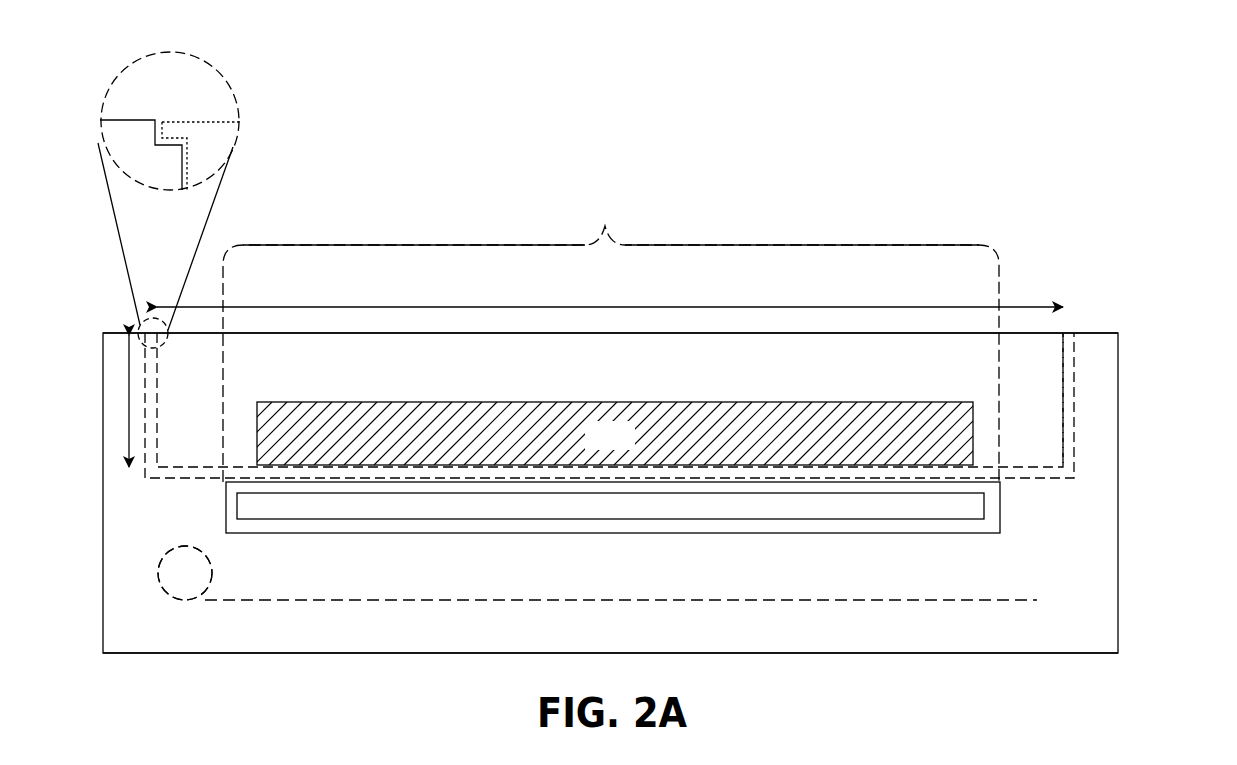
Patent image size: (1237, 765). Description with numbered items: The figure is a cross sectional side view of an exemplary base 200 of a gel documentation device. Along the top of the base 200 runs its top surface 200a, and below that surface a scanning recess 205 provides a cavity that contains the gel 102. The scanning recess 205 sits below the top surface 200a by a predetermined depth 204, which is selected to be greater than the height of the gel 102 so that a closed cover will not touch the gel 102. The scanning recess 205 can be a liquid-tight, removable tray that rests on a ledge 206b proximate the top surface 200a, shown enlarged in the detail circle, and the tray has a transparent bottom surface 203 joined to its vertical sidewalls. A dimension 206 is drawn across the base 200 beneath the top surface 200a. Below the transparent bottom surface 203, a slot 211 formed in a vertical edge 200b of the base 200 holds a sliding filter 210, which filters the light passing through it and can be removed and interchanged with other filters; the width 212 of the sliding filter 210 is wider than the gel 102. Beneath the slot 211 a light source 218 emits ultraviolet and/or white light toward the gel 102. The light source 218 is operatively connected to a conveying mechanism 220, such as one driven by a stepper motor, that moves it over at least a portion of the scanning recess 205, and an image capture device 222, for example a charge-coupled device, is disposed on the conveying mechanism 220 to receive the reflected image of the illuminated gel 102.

The base 200 is at (1088, 143).
The top surface 200a is at (1091, 328).
The vertical edge 200b is at (1088, 575).
The gel 102 is at (628, 446).
The transparent bottom surface 203 is at (1027, 458).
The depth 204 is at (223, 441).
The scanning recess 205 is at (793, 363).
The length dimension / housing wall 206 is at (490, 305).
The ledge 206b is at (165, 145).
The sliding filter 210 is at (737, 506).
The slot 211 is at (653, 533).
The width 212 is at (611, 336).
The light source 218 is at (180, 558).
The conveying mechanism 220 is at (460, 600).
The image capture device 222 is at (168, 578).